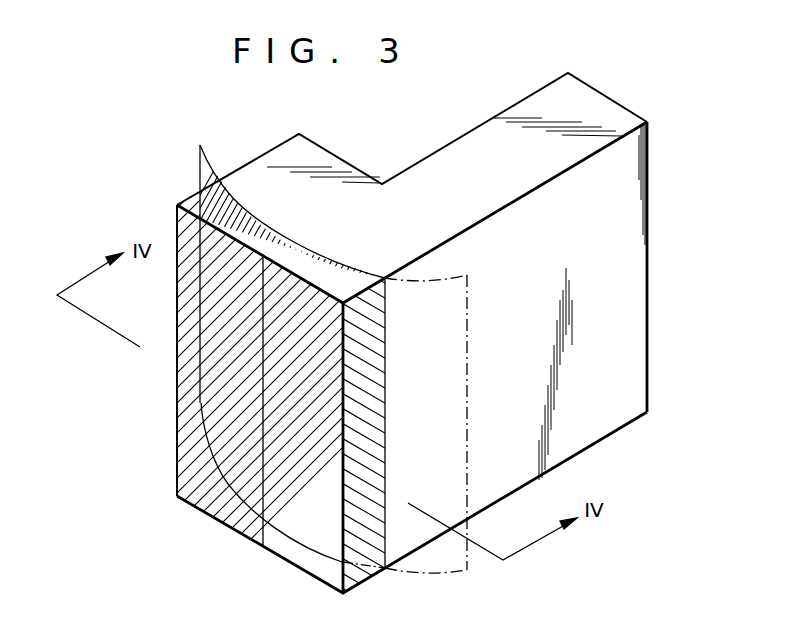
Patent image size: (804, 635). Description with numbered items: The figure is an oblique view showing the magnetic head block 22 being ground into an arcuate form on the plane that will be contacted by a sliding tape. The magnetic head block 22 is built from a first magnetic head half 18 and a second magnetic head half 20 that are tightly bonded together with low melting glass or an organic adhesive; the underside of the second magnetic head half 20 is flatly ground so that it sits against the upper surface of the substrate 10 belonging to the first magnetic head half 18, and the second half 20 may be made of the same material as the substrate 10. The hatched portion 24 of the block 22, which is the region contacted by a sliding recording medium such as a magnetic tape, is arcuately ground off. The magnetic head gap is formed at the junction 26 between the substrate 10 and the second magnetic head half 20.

The substrate 10 is at (617, 115).
The first magnetic head half 18 is at (641, 331).
The second magnetic head half 20 is at (250, 178).
The magnetic head block 22 is at (398, 118).
The arcuately ground portion 24 is at (467, 428).
The junction 26 is at (256, 408).